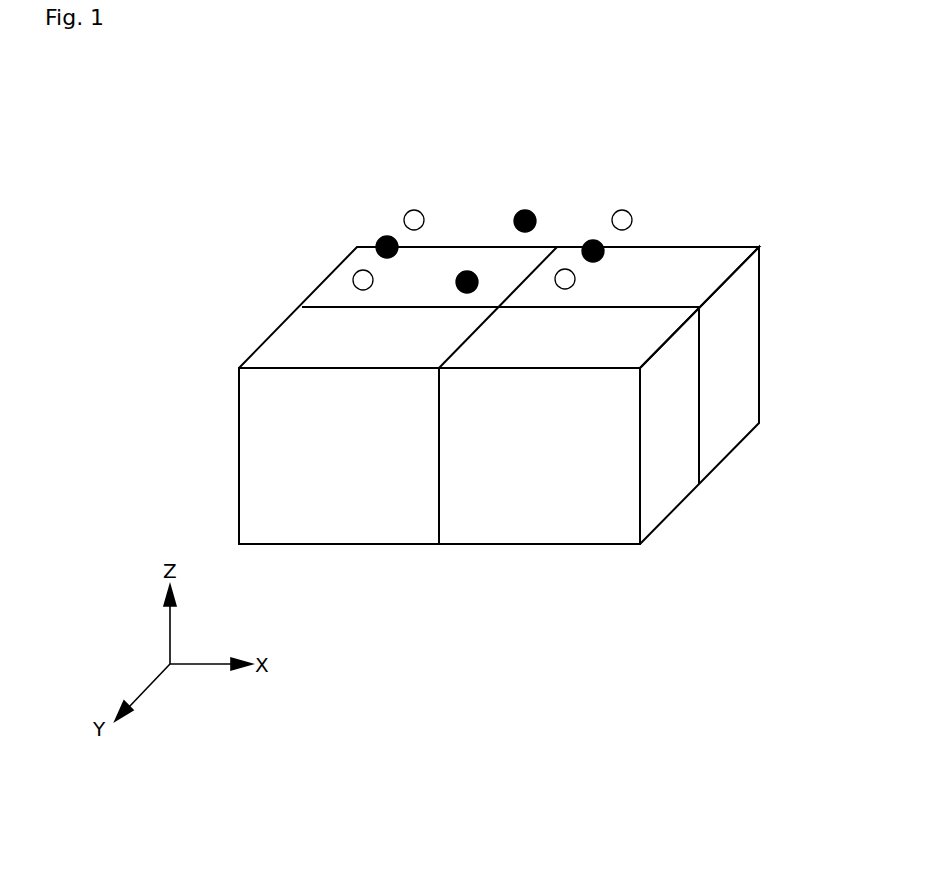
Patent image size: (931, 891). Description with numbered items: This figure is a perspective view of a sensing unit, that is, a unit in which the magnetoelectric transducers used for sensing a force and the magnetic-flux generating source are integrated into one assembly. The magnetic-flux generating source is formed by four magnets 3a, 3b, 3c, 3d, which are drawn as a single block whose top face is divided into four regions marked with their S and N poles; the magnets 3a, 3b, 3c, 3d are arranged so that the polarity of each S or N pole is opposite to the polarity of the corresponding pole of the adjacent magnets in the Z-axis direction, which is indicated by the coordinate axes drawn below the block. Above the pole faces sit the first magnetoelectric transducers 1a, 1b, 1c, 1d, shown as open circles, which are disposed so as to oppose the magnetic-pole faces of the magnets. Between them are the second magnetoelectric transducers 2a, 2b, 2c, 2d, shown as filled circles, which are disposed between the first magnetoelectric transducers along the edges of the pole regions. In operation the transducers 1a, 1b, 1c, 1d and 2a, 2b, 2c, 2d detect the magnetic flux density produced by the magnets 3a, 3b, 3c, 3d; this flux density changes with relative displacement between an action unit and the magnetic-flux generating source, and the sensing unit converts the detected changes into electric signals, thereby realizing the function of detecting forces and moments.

The first magnetoelectric transducer 1a is at (403, 220).
The first magnetoelectric transducer 1b is at (621, 209).
The first magnetoelectric transducer 1c is at (575, 283).
The first magnetoelectric transducer 1d is at (352, 283).
The second magnetoelectric transducer 2a is at (376, 246).
The second magnetoelectric transducer 2b is at (525, 210).
The second magnetoelectric transducer 2c is at (603, 244).
The second magnetoelectric transducer 2d is at (467, 271).
The magnet 3a is at (412, 278).
The magnet 3b is at (638, 273).
The magnet 3c is at (593, 338).
The magnet 3d is at (345, 340).